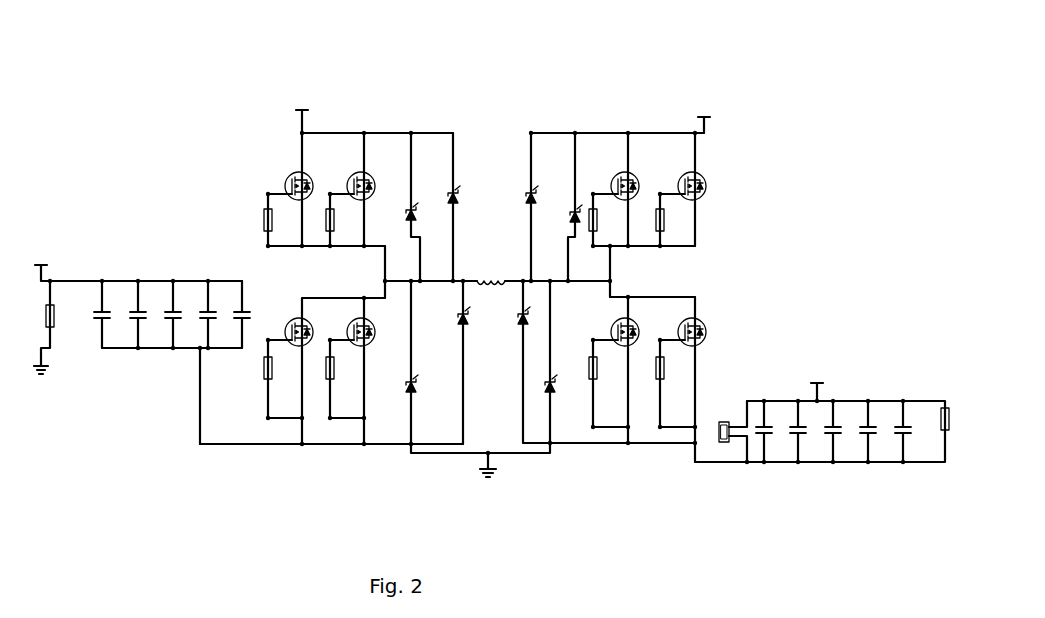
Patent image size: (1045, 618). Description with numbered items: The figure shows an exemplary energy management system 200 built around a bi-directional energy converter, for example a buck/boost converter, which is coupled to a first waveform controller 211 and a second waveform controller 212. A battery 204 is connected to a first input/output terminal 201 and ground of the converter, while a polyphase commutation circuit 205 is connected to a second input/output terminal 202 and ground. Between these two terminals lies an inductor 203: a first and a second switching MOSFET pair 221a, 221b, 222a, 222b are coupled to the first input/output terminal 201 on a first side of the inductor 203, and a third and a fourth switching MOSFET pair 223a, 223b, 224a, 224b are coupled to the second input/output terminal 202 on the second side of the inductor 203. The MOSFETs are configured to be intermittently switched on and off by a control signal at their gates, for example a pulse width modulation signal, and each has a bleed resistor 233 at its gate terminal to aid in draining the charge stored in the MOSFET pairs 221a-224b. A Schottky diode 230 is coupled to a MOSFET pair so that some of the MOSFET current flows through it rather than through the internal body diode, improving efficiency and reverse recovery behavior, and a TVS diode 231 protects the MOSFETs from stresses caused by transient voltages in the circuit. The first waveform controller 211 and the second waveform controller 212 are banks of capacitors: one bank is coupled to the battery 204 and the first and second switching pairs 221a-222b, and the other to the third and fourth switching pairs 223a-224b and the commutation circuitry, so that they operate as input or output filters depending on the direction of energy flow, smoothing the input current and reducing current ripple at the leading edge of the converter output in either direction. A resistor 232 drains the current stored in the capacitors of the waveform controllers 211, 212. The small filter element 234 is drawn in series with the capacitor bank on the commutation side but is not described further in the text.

The energy management system 200 is at (152, 100).
The first input/output terminal 201 is at (302, 133).
The second input/output terminal 202 is at (695, 133).
The inductor 203 is at (477, 279).
The battery 204 is at (316, 110).
The polyphase commutation circuit 205 is at (645, 118).
The first waveform controller 211 is at (842, 401).
The second waveform controller 212 is at (110, 348).
The first switching MOSFET pair 221a is at (350, 173).
The first switching MOSFET pair 221b is at (350, 189).
The second switching MOSFET pair 222a is at (348, 342).
The second switching MOSFET pair 222b is at (350, 371).
The third switching MOSFET pair 223a is at (682, 173).
The third switching MOSFET pair 223b is at (681, 189).
The fourth switching MOSFET pair 224a is at (682, 318).
The fourth switching MOSFET pair 224b is at (681, 379).
The Schottky diode 230 is at (413, 213).
The TVS diode 231 is at (460, 326).
The resistor 232 is at (58, 312).
The bleed resistor 233 is at (598, 379).
The ferrite bead / filter element 234 is at (723, 443).